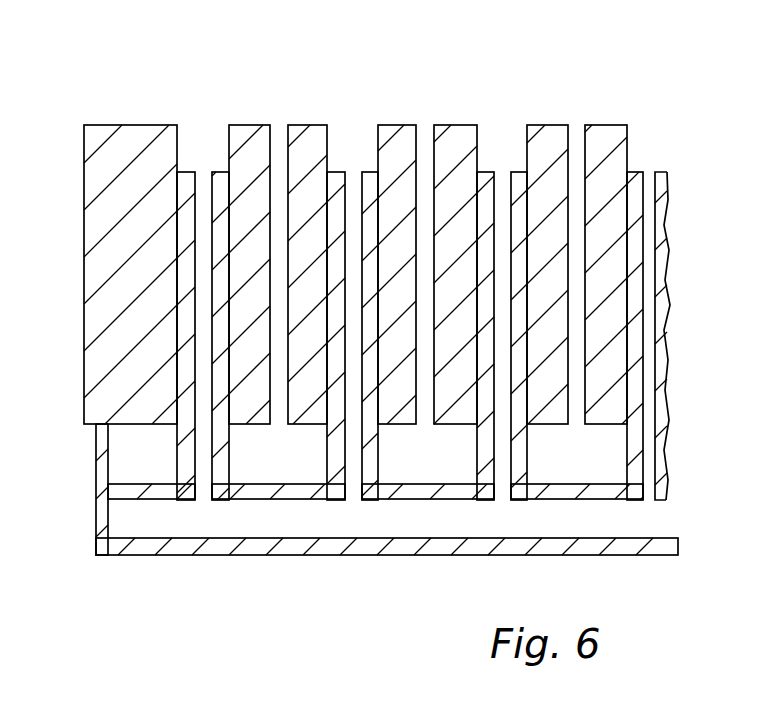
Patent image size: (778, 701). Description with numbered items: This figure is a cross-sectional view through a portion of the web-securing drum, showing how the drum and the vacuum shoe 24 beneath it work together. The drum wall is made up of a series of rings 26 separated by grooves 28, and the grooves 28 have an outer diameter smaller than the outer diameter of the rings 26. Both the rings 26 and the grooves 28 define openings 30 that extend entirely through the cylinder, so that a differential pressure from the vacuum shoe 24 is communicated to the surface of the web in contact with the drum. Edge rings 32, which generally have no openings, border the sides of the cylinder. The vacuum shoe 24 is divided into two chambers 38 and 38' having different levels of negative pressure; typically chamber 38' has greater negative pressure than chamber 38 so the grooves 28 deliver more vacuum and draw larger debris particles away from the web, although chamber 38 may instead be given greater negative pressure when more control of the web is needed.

The vacuum shoe 24 is at (80, 523).
The rings 26 is at (410, 127).
The grooves 28 is at (204, 138).
The openings 30 is at (281, 96).
The edge rings 32 is at (137, 182).
The chamber 38 is at (411, 461).
The chamber 38' is at (419, 529).